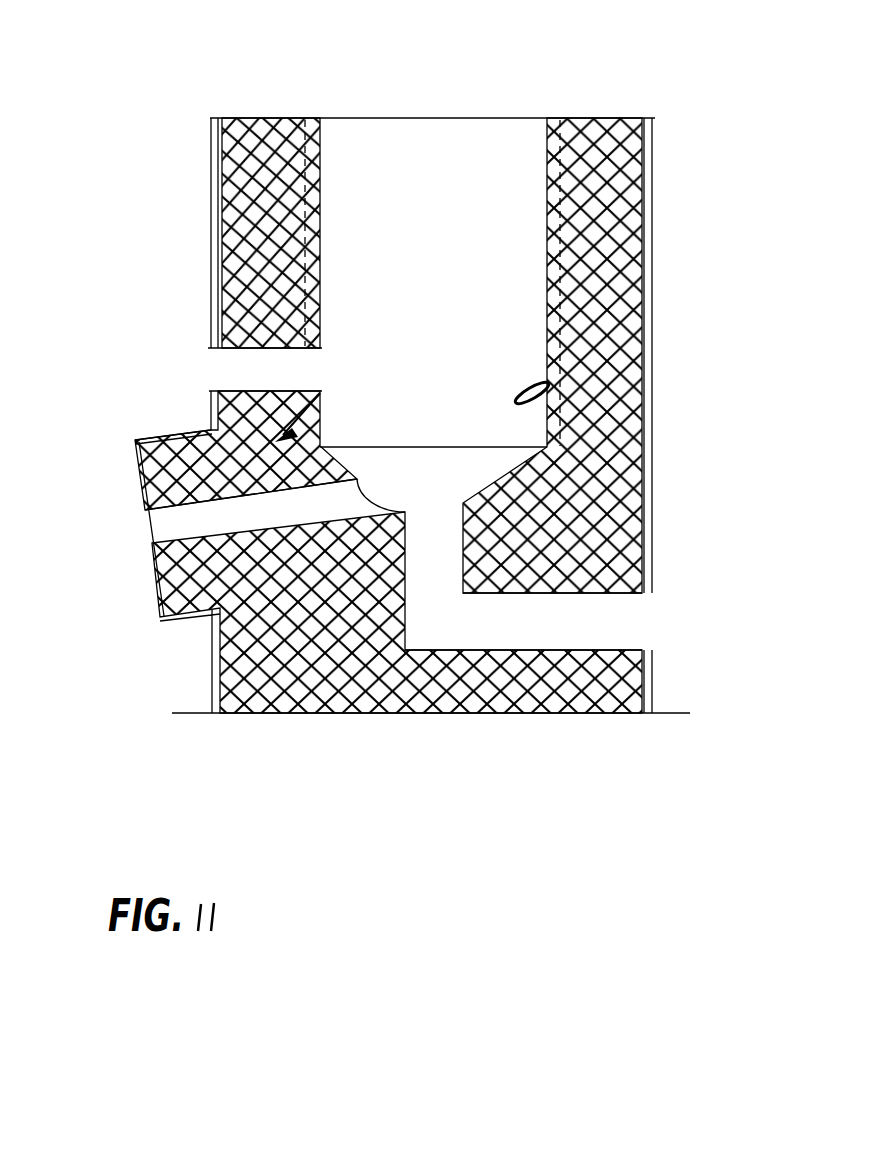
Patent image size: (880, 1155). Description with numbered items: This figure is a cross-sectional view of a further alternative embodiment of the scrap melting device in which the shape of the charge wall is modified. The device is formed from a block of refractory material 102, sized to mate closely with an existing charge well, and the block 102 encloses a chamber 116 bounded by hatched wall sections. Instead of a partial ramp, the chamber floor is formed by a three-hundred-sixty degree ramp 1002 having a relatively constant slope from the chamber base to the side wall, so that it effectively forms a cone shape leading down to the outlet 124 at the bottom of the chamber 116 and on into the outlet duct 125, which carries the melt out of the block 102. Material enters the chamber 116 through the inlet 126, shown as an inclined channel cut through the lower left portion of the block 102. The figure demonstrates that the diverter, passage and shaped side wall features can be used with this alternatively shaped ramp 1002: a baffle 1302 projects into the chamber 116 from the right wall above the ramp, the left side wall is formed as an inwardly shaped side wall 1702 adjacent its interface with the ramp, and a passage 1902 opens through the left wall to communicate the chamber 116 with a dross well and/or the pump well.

The chamber 116 is at (432, 160).
The block of refractory material 102 is at (262, 255).
The passage 1902 is at (217, 375).
The inwardly shaped side wall 1702 is at (215, 403).
The baffle 1302 is at (549, 389).
The 360° ramp 1002 is at (530, 483).
The outlet 124 is at (436, 492).
The outlet duct 125 is at (608, 627).
The inlet 126 is at (168, 657).